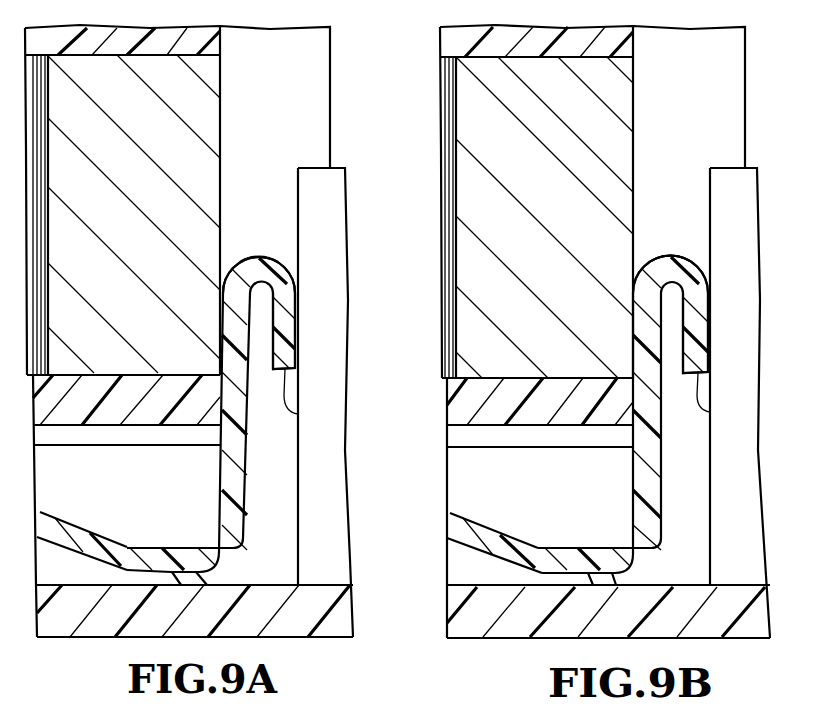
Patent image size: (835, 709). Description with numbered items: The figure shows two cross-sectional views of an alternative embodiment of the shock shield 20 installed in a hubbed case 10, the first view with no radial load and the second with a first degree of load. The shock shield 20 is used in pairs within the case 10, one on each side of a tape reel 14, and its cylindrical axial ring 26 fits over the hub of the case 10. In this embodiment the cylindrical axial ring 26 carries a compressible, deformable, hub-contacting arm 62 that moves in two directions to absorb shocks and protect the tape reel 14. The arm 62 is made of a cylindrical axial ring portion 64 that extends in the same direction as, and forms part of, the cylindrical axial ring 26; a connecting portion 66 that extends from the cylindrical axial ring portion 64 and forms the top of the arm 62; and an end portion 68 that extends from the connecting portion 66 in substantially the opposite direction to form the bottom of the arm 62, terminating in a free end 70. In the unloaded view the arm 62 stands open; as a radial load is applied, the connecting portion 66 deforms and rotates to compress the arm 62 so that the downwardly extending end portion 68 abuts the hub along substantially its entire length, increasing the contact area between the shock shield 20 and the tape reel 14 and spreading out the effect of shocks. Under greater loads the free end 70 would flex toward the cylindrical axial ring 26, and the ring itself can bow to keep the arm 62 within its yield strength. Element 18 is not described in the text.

In FIG. 9A, the hubbed case 10 is at (65, 625).
In FIG. 9B, the hubbed case 10 is at (473, 632).
In FIG. 9A, the tape reel 14 is at (35, 55).
In FIG. 9B, the tape reel 14 is at (447, 73).
In FIG. 9A, the insulation block 18 is at (207, 88).
In FIG. 9B, the insulation block 18 is at (625, 100).
In FIG. 9A, the shock shield 20 is at (82, 556).
In FIG. 9B, the shock shield 20 is at (463, 549).
In FIG. 9A, the cylindrical axial ring 26 is at (237, 495).
In FIG. 9B, the cylindrical axial ring 26 is at (653, 515).
In FIG. 9A, the hub-contacting arm 62 is at (306, 263).
In FIG. 9B, the hub-contacting arm 62 is at (718, 256).
In FIG. 9A, the cylindrical axial ring portion 64 is at (235, 323).
In FIG. 9B, the cylindrical axial ring portion 64 is at (645, 315).
In FIG. 9A, the connecting portion 66 is at (258, 257).
In FIG. 9B, the connecting portion 66 is at (670, 255).
In FIG. 9A, the end portion 68 is at (287, 328).
In FIG. 9B, the end portion 68 is at (705, 323).
In FIG. 9A, the free end 70 is at (299, 416).
In FIG. 9B, the free end 70 is at (712, 398).